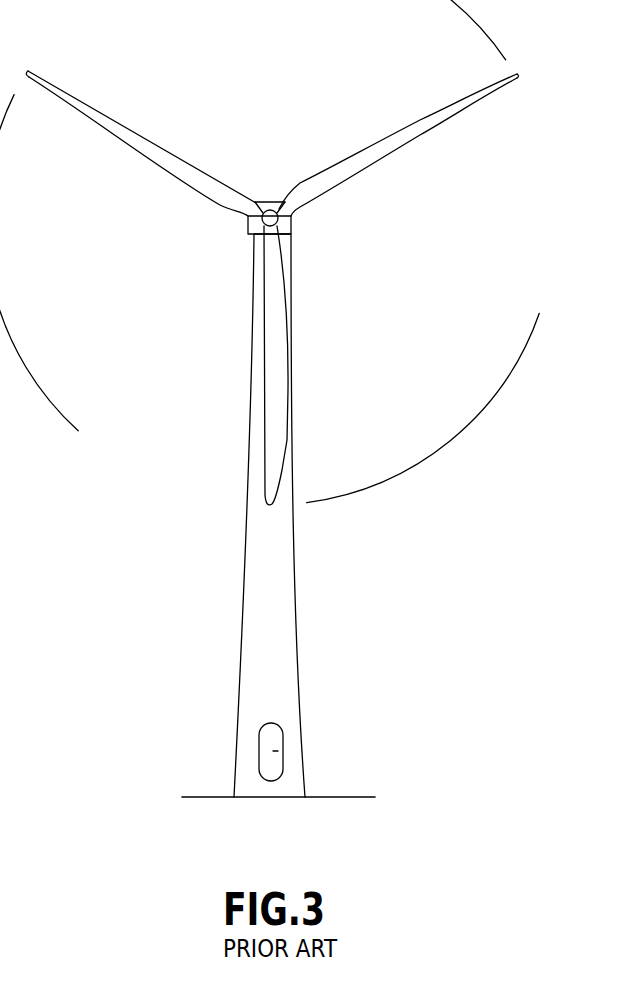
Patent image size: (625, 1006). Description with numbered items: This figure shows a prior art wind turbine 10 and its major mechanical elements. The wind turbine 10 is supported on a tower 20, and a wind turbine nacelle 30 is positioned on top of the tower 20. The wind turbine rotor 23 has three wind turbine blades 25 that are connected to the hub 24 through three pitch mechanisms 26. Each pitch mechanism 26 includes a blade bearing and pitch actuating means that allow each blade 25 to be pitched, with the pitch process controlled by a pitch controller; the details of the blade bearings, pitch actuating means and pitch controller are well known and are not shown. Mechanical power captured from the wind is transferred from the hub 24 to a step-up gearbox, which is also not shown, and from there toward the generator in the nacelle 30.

The wind turbine 10 is at (148, 558).
The tower 20 is at (281, 606).
The wind turbine rotor 23 is at (169, 199).
The hub 24 is at (272, 210).
The wind turbine blade 25 is at (268, 423).
The pitch mechanism 26 is at (292, 228).
The wind turbine nacelle 30 is at (293, 233).